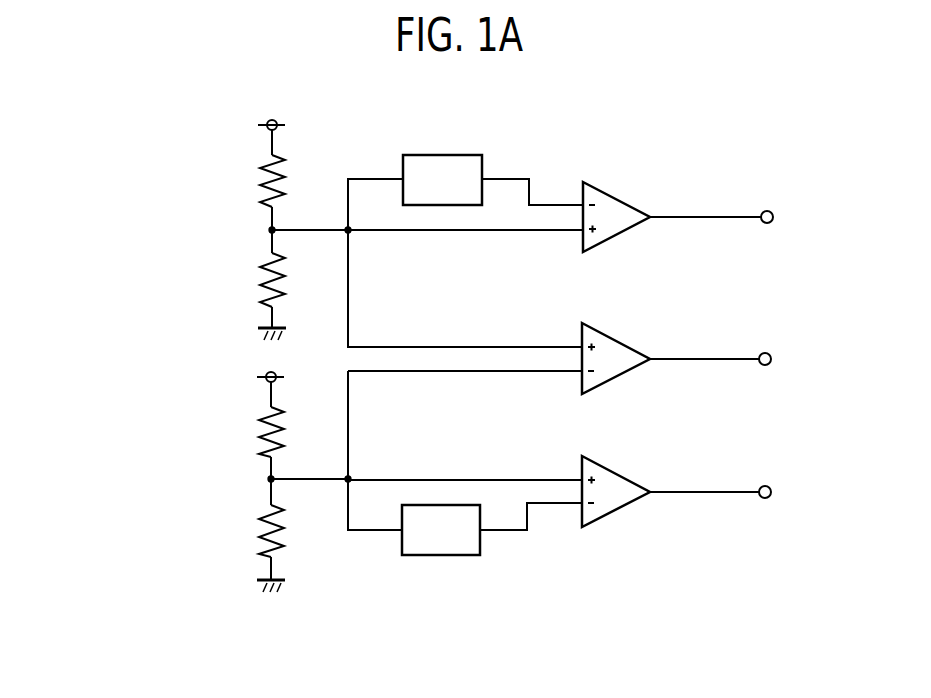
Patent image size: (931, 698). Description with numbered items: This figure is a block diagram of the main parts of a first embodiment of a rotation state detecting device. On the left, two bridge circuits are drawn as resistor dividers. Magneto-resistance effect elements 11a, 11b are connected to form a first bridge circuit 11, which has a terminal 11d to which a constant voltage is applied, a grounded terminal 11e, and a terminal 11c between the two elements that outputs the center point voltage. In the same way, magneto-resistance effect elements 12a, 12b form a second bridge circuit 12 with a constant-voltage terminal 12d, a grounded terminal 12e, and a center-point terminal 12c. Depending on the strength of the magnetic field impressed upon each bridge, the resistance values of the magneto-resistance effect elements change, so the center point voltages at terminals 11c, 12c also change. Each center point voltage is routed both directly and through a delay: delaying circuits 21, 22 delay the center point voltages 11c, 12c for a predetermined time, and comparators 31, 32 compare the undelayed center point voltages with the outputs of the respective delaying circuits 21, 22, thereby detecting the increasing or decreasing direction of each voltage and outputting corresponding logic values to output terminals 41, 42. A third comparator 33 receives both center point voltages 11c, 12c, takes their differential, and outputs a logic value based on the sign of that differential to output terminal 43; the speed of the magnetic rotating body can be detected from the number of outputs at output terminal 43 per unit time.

The first bridge circuit 11 is at (174, 168).
The magneto-resistance effect element 11a is at (258, 184).
The magneto-resistance effect element 11b is at (258, 284).
The terminal 11c is at (317, 228).
The terminal 11d is at (258, 124).
The grounded terminal 11e is at (258, 334).
The second bridge circuit 12 is at (174, 420).
The magneto-resistance effect element 12a is at (258, 435).
The magneto-resistance effect element 12b is at (258, 535).
The terminal 12c is at (317, 478).
The terminal 12d is at (258, 376).
The grounded terminal 12e is at (258, 585).
The delaying circuit 21 is at (450, 154).
The delaying circuit 22 is at (447, 556).
The comparator 31 is at (618, 197).
The comparator 32 is at (618, 513).
The comparator 33 is at (618, 338).
The output terminal 41 is at (767, 209).
The output terminal 42 is at (767, 485).
The output terminal 43 is at (767, 351).